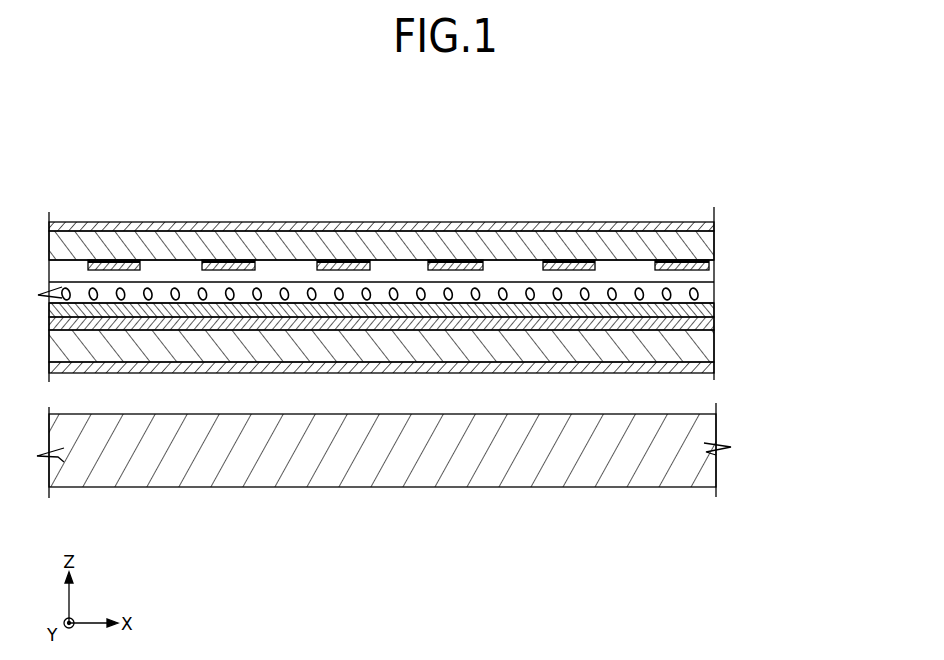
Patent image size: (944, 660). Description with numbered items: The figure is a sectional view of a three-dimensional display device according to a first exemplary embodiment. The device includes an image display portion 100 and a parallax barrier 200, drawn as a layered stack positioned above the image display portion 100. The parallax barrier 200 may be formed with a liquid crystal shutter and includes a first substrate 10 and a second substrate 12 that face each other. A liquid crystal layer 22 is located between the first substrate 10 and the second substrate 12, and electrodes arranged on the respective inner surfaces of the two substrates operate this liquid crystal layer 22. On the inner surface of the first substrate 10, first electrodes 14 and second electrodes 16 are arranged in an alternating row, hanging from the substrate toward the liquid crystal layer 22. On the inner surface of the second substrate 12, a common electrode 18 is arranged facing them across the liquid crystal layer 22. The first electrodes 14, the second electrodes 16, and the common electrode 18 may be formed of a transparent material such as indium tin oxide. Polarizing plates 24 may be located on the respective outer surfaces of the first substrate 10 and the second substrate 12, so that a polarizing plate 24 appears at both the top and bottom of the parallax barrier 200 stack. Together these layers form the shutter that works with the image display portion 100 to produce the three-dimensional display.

The first substrate 10 is at (702, 246).
The second substrate 12 is at (702, 346).
The first electrodes 14 is at (92, 266).
The second electrodes 16 is at (200, 262).
The common electrode 18 is at (702, 323).
The liquid crystal layer 22 is at (405, 296).
The polarizing plate 24 is at (706, 226).
The image display portion 100 is at (770, 450).
The parallax barrier 200 is at (790, 275).